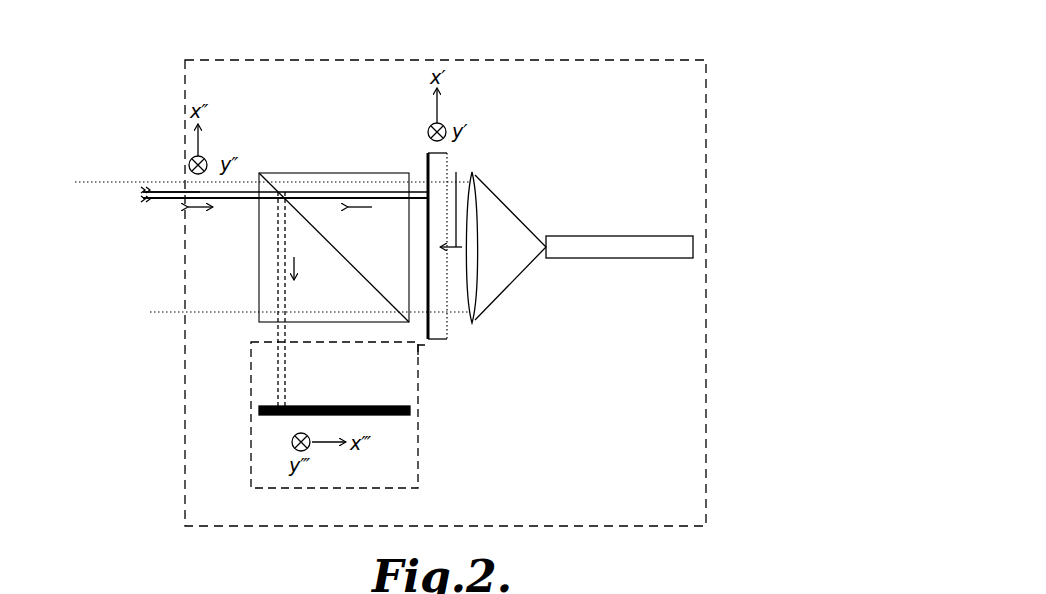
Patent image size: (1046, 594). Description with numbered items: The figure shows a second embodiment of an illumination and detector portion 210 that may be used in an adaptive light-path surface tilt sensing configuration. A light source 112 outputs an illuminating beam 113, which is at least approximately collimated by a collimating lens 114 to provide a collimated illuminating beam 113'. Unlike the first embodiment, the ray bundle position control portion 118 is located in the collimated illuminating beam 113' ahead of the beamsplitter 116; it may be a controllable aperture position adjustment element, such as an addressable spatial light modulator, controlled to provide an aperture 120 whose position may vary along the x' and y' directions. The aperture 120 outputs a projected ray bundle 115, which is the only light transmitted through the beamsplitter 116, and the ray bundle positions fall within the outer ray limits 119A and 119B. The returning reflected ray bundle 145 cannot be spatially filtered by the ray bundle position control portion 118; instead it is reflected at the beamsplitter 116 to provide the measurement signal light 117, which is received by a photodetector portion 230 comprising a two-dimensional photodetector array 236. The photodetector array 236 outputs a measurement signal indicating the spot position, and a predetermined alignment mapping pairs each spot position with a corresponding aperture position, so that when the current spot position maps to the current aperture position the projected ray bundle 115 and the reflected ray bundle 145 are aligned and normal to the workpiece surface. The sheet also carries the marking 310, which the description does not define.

The illumination and detector portion 210 is at (706, 60).
The photodetector portion 230 is at (423, 349).
The outer ray limit 119A is at (130, 182).
The outer ray limit 119B is at (152, 312).
The projected ray bundle 115 is at (382, 190).
The reflected ray bundle 145 is at (168, 199).
The beamsplitter 116 is at (303, 172).
The measurement signal light 117 is at (278, 327).
The aperture 120 is at (425, 187).
The ray bundle position control portion 118 is at (447, 325).
The collimating lens 114 is at (473, 172).
The collimated illuminating beam 113' is at (485, 175).
The illuminating beam 113 is at (511, 244).
The light source 112 is at (675, 236).
The 2D photodetector array 236 is at (410, 412).
The sheet label 310 is at (711, 581).